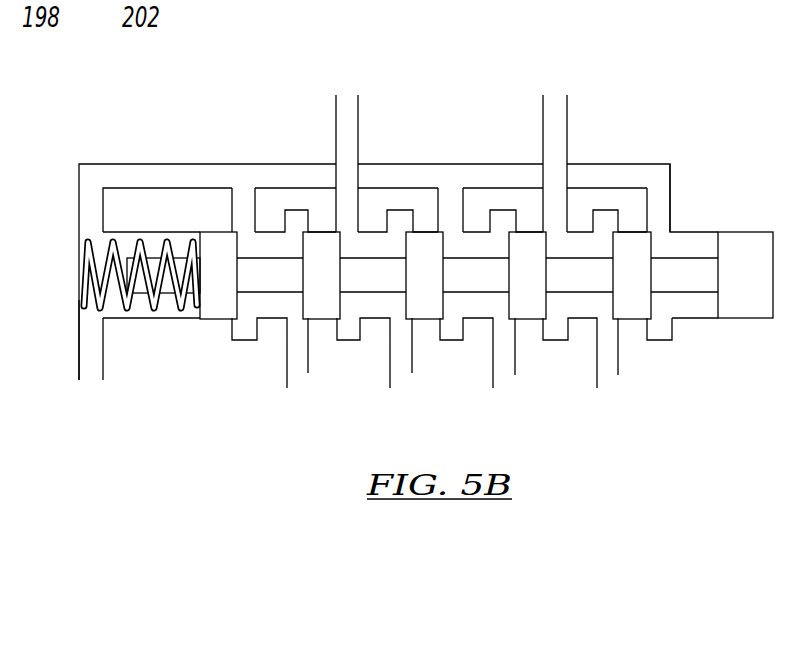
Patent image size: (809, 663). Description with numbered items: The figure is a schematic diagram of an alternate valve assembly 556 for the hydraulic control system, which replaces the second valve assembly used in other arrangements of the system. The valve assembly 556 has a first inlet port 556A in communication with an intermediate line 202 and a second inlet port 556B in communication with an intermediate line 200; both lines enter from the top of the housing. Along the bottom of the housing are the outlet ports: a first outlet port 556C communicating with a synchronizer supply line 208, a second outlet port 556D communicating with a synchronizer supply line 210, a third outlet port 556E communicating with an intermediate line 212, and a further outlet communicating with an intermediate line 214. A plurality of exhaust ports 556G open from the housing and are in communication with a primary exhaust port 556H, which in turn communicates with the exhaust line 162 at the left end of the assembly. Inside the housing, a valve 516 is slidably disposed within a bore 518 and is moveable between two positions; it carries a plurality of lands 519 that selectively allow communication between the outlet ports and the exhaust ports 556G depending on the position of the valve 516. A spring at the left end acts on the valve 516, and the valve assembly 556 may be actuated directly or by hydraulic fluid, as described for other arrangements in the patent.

The valve assembly 556 is at (712, 83).
The exhaust line 162 is at (79, 378).
The intermediate line 202 is at (360, 105).
The intermediate line 200 is at (568, 104).
The exhaust ports 556G is at (248, 232).
The first inlet port 556A is at (347, 232).
The second inlet port 556B is at (555, 232).
The valve 516 is at (738, 255).
The lands 519 is at (217, 304).
The bore 518 is at (706, 320).
The primary exhaust port 556H is at (93, 323).
The first outlet port 556C is at (292, 325).
The synchronizer supply line 208 is at (308, 373).
The second outlet port 556D is at (398, 323).
The synchronizer supply line 210 is at (412, 373).
The intermediate line 212 is at (515, 375).
The third outlet port 556E is at (603, 323).
The intermediate line 214 is at (618, 375).